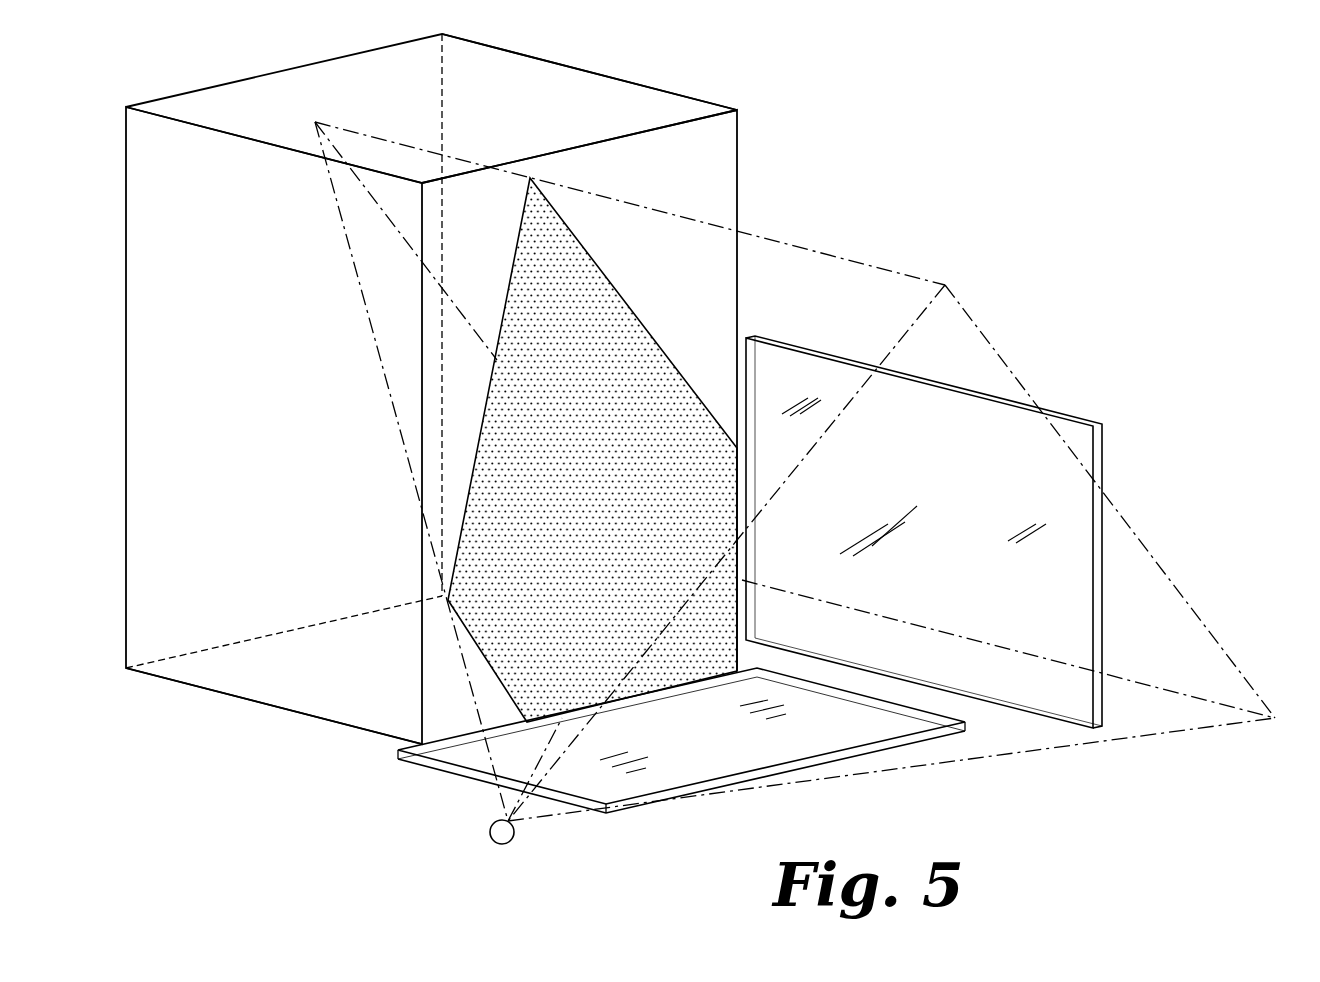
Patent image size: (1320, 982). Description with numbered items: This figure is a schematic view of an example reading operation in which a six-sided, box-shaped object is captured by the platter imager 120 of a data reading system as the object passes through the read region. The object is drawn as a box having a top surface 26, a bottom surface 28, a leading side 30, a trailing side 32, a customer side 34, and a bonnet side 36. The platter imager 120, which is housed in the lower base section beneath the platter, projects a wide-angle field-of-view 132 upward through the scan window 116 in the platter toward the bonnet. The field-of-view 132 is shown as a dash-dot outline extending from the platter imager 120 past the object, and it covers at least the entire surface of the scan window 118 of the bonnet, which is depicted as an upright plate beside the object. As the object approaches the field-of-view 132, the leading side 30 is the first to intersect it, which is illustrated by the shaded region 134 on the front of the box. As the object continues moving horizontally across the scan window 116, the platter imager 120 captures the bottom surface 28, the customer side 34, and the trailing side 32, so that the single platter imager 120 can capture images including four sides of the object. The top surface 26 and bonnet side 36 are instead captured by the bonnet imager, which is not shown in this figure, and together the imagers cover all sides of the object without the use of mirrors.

The top surface 26 is at (431, 401).
The bottom surface 28 is at (334, 722).
The leading side 30 is at (688, 178).
The trailing side 32 is at (261, 76).
The customer side 34 is at (281, 413).
The bonnet side 36 is at (620, 80).
The scan window 116 is at (692, 753).
The scan window 118 is at (1082, 442).
The platter imager 120 is at (500, 845).
The field-of-view 132 is at (1158, 618).
The region 134 is at (603, 484).